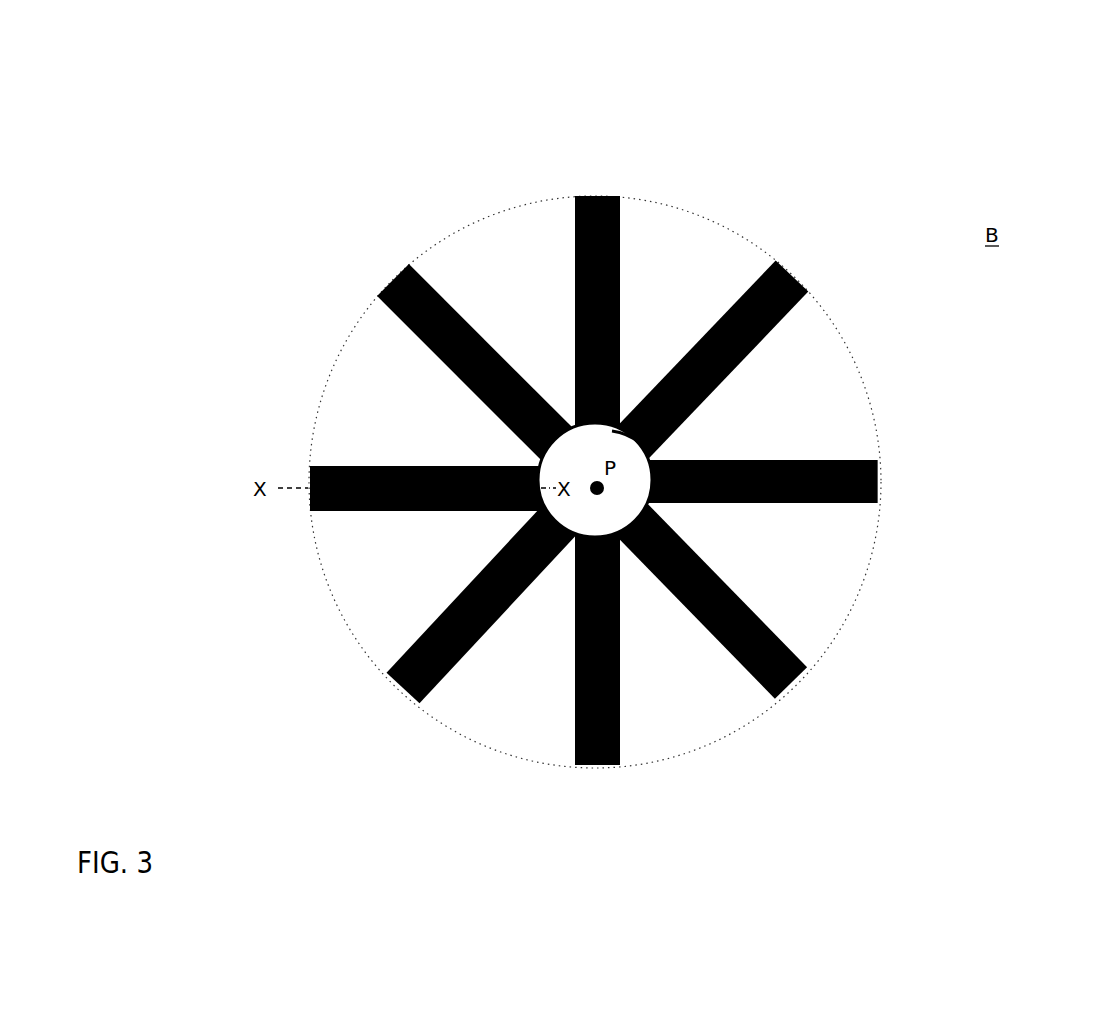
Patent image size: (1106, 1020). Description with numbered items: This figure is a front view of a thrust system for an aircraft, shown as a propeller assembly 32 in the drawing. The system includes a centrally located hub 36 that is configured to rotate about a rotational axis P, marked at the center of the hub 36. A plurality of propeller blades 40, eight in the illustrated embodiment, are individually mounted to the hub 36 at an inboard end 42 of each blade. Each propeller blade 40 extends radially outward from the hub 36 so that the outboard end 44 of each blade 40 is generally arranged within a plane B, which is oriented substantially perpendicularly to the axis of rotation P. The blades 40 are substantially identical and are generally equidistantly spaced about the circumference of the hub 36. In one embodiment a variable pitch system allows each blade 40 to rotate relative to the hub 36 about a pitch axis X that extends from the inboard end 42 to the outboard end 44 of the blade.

The radial arm assembly 32 is at (858, 180).
The hub 36 is at (573, 420).
The propeller blades 40 is at (755, 345).
The inboard end 42 is at (634, 420).
The outboard end 44 is at (877, 487).